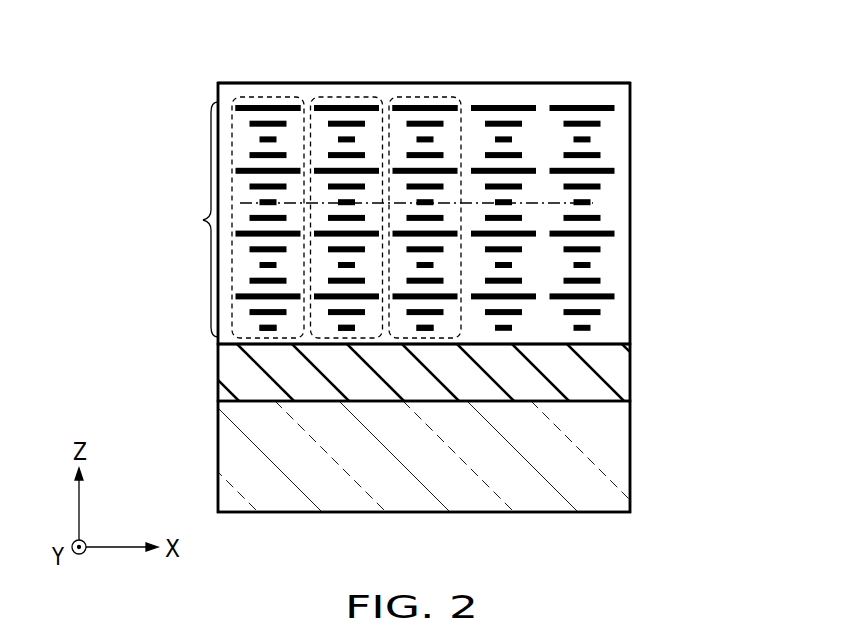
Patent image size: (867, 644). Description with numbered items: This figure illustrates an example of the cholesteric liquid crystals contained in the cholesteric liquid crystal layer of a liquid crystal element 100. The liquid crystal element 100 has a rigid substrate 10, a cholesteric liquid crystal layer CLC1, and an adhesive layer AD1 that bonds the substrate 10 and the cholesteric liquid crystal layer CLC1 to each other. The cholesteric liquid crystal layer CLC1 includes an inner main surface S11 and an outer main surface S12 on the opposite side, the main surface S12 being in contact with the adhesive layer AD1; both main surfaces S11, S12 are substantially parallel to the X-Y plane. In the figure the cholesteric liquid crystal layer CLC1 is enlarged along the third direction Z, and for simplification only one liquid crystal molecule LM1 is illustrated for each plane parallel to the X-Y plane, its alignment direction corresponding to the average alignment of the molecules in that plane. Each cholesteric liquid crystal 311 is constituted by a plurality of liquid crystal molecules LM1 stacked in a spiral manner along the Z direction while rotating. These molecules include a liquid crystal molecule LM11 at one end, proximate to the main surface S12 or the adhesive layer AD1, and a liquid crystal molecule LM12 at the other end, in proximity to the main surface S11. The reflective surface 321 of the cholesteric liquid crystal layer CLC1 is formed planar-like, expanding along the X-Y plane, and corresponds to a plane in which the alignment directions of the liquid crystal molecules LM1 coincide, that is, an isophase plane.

The liquid crystal element 100 is at (680, 61).
The cholesteric liquid crystal layer CLC1 is at (630, 83).
The main surface (inner surface) S11 is at (557, 83).
The main surface (outer surface) S12 is at (548, 344).
The adhesive layer AD1 is at (622, 370).
The rigid substrate 10 is at (627, 447).
The liquid crystal molecule LM1 is at (383, 219).
The cholesteric liquid crystal 311 is at (252, 95).
The liquid crystal molecule LM12 is at (329, 106).
The liquid crystal molecule LM11 is at (423, 333).
The reflective surface 321 is at (593, 203).